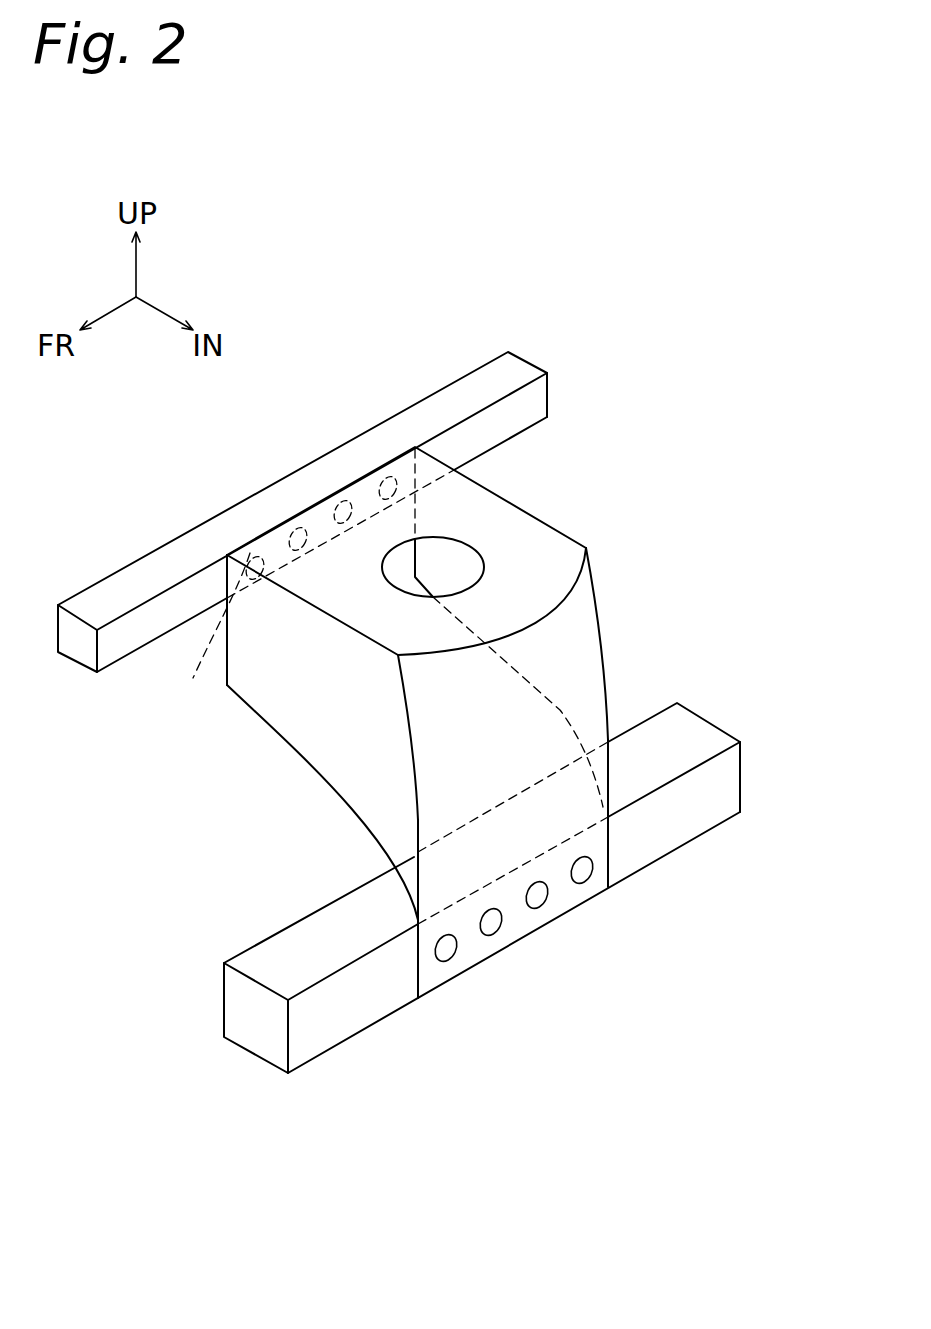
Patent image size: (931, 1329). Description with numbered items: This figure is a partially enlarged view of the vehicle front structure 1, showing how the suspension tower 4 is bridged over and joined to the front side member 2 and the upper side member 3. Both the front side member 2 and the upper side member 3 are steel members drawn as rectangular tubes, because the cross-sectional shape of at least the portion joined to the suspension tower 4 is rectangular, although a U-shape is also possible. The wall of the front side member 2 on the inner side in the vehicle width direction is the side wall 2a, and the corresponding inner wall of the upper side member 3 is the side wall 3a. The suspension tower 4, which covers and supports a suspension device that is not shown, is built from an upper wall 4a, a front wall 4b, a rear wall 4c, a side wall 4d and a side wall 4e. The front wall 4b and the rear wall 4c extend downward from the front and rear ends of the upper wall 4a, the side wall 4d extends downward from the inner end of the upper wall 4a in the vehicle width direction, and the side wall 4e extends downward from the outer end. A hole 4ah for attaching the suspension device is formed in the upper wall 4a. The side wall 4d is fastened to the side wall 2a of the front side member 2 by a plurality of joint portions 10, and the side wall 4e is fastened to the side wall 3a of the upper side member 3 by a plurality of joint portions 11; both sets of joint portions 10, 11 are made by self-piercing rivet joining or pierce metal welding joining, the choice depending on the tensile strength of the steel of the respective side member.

The vehicle front structure 1 is at (696, 314).
The front side member 2 is at (240, 930).
The side wall 2a is at (340, 1013).
The upper side member 3 is at (83, 567).
The side wall 3a is at (130, 638).
The suspension tower 4 is at (607, 543).
The upper wall 4a is at (537, 535).
The hole 4ah is at (462, 545).
The front wall 4b is at (282, 702).
The rear wall 4c is at (567, 654).
The side wall 4d is at (517, 742).
The side wall 4e is at (217, 630).
The joint portions 10 is at (602, 934).
The joint portions 11 is at (390, 476).